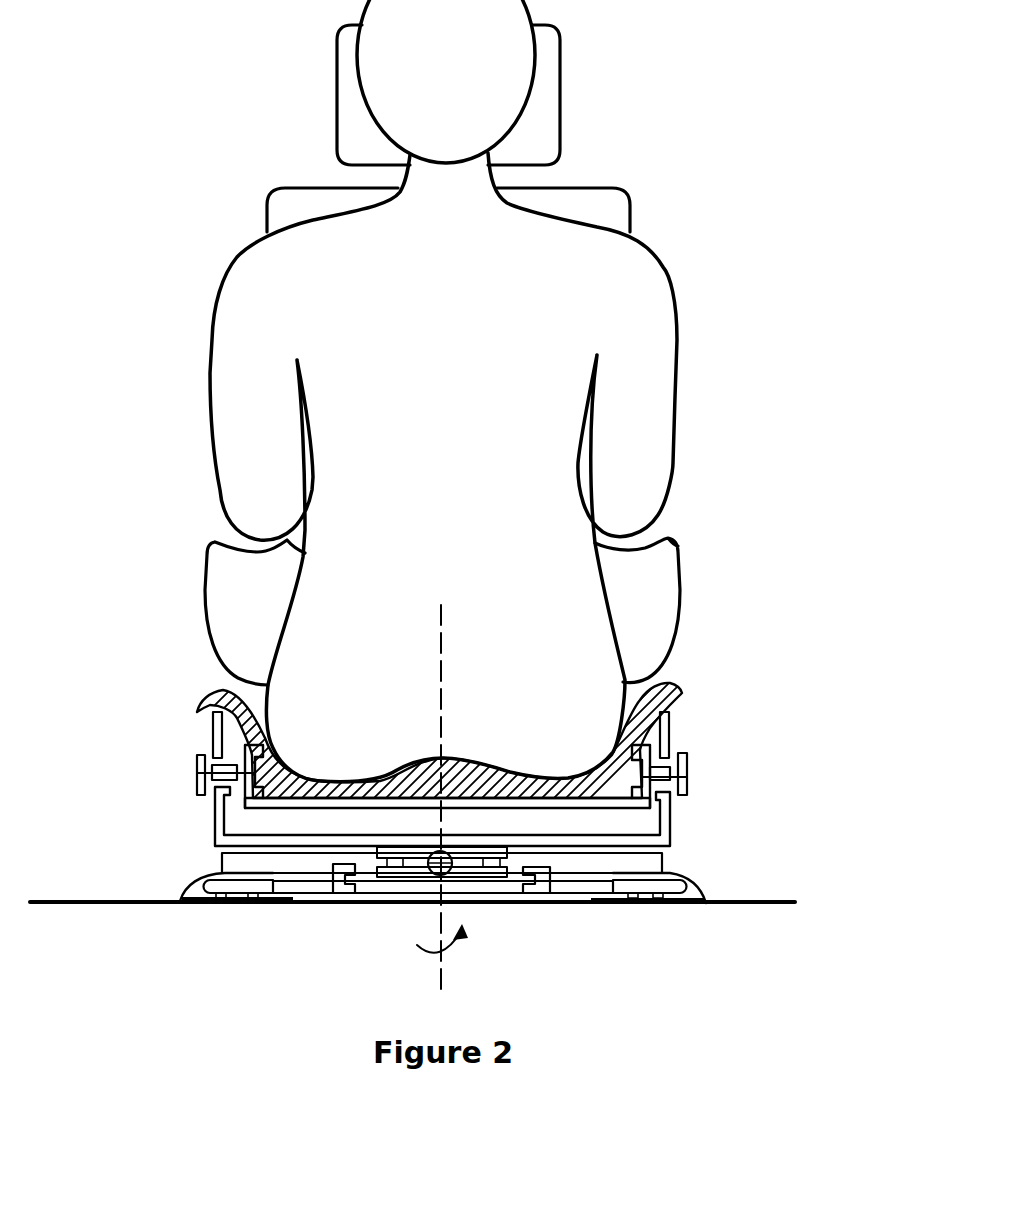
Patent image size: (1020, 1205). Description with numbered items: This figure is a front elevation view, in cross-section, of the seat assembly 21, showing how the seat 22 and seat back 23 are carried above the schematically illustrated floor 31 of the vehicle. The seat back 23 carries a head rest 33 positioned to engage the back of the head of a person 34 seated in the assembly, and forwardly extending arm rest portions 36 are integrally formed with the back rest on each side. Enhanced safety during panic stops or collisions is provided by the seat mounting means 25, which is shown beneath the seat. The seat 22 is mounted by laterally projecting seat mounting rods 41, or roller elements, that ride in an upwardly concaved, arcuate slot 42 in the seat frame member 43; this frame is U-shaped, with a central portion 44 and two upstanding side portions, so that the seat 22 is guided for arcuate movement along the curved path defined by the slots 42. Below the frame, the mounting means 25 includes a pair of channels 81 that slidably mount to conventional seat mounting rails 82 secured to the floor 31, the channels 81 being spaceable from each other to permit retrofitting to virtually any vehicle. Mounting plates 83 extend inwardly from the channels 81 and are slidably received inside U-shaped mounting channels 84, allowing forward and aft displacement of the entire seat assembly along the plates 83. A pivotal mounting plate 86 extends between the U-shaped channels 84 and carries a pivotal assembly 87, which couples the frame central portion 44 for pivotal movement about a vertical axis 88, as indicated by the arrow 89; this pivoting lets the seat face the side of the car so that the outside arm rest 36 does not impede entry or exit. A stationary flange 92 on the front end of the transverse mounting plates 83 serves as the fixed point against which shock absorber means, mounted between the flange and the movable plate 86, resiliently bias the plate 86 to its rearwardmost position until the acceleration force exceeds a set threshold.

The seat assembly 21 is at (727, 640).
The seat 22 is at (210, 690).
The seat back 23 is at (608, 205).
The seat mounting means 25 is at (770, 865).
The floor 31 is at (775, 908).
The head rest 33 is at (560, 80).
The person 34 is at (680, 315).
The arm rest portions 36 is at (205, 572).
The seat mounting rods 41 is at (217, 735).
The arcuate slot 42 is at (203, 752).
The seat frame member 43 is at (213, 820).
The central portion 44 is at (513, 837).
The channels 81 is at (182, 900).
The seat mounting rails 82 is at (265, 905).
The mounting plates 83 is at (310, 890).
The U-shaped mounting channels 84 is at (345, 895).
The pivotal mounting plate 86 is at (492, 883).
The pivotal assembly 87 is at (410, 853).
The vertical axis 88 is at (442, 652).
The arrow 89 is at (427, 946).
The stationary flange 92 is at (640, 864).